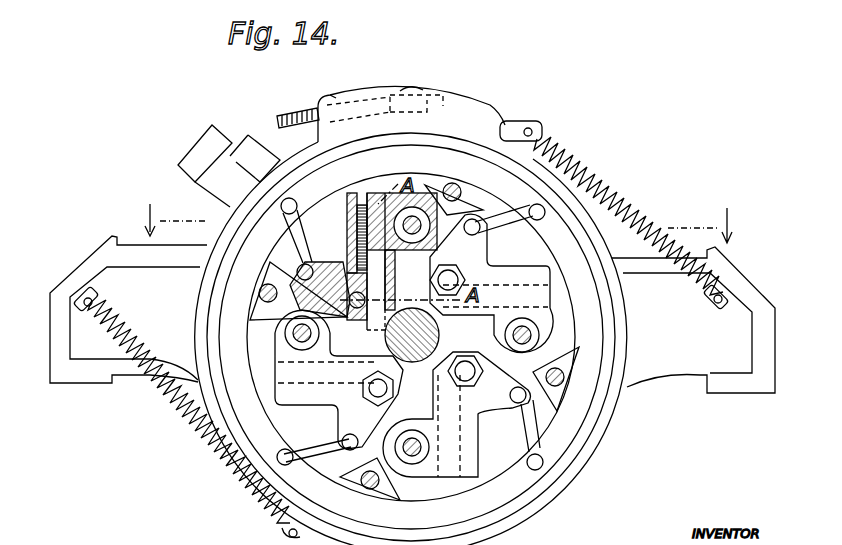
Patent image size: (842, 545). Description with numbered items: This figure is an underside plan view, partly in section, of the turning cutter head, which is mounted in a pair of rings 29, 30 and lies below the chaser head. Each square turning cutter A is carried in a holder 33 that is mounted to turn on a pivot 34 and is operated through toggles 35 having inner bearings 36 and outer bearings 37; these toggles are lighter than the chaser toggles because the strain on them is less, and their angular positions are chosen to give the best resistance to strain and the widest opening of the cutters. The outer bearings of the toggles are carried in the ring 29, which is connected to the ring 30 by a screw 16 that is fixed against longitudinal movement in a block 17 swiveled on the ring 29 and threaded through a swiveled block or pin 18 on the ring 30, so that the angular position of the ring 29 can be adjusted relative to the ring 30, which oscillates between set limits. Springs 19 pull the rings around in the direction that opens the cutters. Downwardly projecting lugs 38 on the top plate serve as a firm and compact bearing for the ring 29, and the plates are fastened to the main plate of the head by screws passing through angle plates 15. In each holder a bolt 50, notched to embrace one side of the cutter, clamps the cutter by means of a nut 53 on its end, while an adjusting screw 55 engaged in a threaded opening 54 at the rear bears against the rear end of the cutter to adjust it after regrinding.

The angle plates 15 is at (440, 223).
The screw 16 is at (288, 114).
The block 17 is at (412, 89).
The swiveled block or pin 18 is at (335, 98).
The springs 19 is at (210, 450).
The ring 29 is at (411, 339).
The ring 30 is at (216, 240).
The holder 33 is at (503, 278).
The pivot 34 is at (540, 323).
The toggles 35 is at (498, 230).
The inner bearings 36 is at (297, 270).
The outer bearings 37 is at (290, 222).
The lugs 38 is at (562, 352).
The bolt 50 is at (352, 262).
The nut 53 is at (370, 382).
The threaded opening 54 is at (357, 212).
The adjusting screw 55 is at (360, 196).